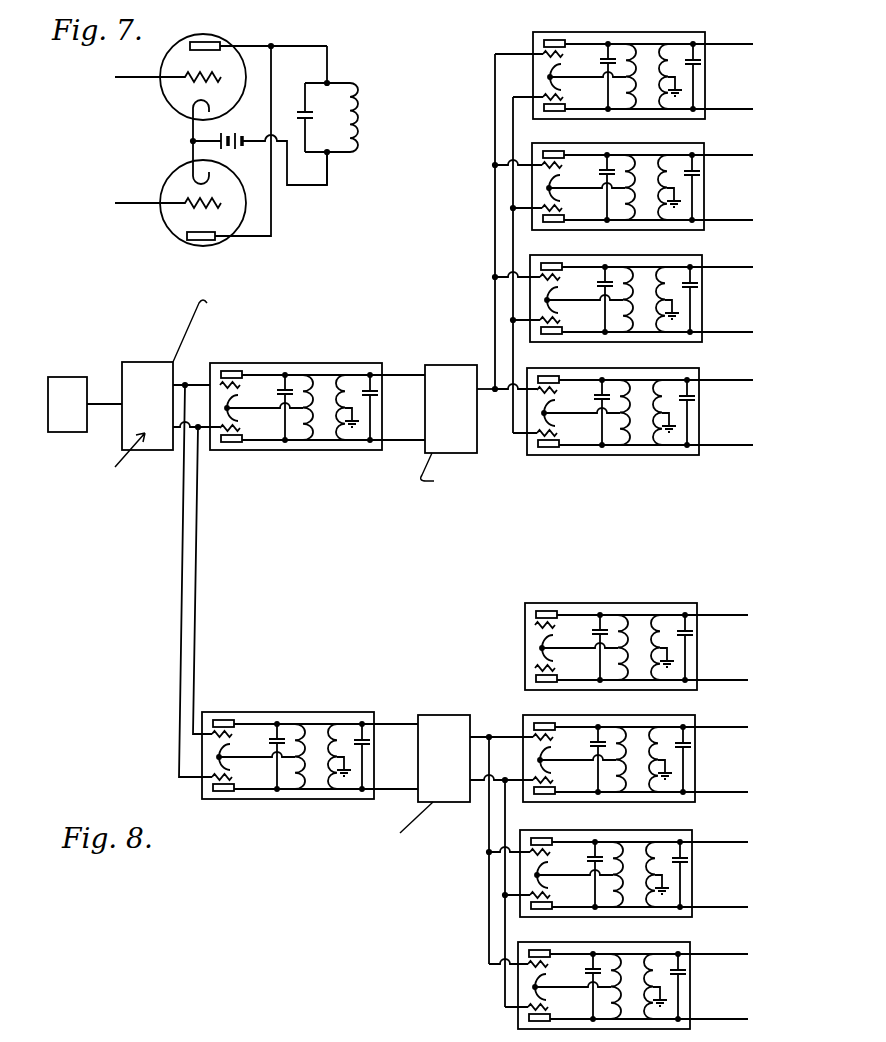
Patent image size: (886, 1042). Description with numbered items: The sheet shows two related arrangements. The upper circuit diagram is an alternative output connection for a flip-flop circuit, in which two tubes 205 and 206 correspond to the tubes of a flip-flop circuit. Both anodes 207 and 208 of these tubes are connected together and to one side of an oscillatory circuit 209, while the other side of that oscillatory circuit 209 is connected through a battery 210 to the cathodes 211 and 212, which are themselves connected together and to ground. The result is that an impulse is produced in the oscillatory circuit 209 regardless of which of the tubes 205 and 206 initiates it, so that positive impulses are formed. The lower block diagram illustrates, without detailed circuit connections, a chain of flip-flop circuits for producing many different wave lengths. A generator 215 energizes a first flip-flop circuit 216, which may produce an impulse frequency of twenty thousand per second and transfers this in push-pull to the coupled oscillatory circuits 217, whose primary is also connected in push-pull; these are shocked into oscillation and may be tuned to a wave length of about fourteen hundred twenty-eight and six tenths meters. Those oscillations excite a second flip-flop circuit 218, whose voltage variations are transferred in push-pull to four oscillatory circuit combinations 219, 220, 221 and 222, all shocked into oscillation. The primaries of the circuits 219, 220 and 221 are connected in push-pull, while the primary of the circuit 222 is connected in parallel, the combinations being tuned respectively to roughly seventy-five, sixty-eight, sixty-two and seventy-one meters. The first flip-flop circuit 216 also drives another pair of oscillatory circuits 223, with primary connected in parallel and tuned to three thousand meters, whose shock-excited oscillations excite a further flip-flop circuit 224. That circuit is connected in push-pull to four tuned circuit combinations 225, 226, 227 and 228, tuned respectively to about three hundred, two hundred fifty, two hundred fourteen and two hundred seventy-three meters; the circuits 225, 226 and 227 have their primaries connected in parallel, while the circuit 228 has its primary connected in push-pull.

In FIG. 7, the tube 205 is at (220, 40).
In FIG. 7, the tube 206 is at (204, 244).
In FIG. 7, the anode 207 is at (190, 42).
In FIG. 7, the anode 208 is at (186, 236).
In FIG. 7, the oscillatory circuit 209 is at (343, 90).
In FIG. 7, the battery 210 is at (240, 133).
In FIG. 7, the cathode 211 is at (187, 95).
In FIG. 7, the cathode 212 is at (184, 181).
In FIG. 8, the generator 215 is at (68, 377).
In FIG. 8, the first flip-flop circuit 216 is at (147, 362).
In FIG. 8, the coupled oscillatory circuits 217 is at (268, 363).
In FIG. 8, the second flip-flop circuit 218 is at (440, 365).
In FIG. 8, the oscillatory circuit combination 219 is at (692, 143).
In FIG. 8, the oscillatory circuit combination 220 is at (688, 255).
In FIG. 8, the oscillatory circuit combination 221 is at (686, 368).
In FIG. 8, the oscillatory circuit combination 222 is at (675, 32).
In FIG. 8, the pair of oscillatory circuits 223 is at (272, 712).
In FIG. 8, the flip-flop circuit 224 is at (436, 713).
In FIG. 8, the tuned circuit combination 225 is at (641, 603).
In FIG. 8, the tuned circuit combination 226 is at (680, 717).
In FIG. 8, the tuned circuit combination 227 is at (678, 830).
In FIG. 8, the tuned circuit combination 228 is at (672, 942).